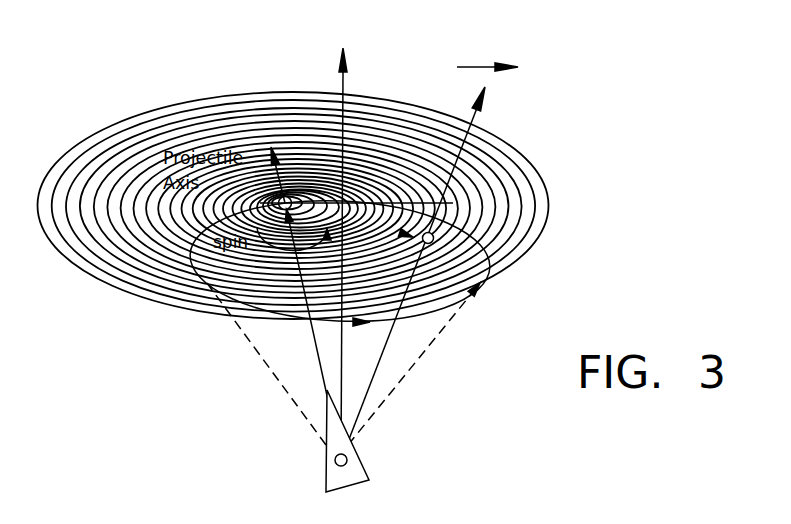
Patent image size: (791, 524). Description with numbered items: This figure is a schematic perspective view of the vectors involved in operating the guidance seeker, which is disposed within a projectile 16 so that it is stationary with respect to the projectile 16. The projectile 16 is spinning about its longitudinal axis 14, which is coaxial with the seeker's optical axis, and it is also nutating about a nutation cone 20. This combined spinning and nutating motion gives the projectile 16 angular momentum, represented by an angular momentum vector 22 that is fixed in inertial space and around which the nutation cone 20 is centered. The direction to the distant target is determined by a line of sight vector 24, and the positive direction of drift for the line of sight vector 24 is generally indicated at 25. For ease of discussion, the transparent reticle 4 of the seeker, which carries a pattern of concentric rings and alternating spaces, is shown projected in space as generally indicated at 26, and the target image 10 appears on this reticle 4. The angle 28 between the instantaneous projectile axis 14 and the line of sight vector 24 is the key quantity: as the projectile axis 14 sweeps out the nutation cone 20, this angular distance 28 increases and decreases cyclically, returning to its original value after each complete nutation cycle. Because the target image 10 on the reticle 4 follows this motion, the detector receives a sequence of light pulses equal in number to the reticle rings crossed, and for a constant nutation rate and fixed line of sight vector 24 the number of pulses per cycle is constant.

The transparent reticle 4 is at (348, 453).
The image 10 is at (434, 240).
The longitudinal axis 14 is at (320, 367).
The projectile 16 is at (335, 473).
The nutation cone 20 is at (232, 322).
The angular momentum vector 22 is at (347, 80).
The line of sight vector 24 is at (476, 112).
The positive direction of drift 25 is at (473, 63).
The projected reticle 26 is at (547, 197).
The angle 28 is at (330, 200).